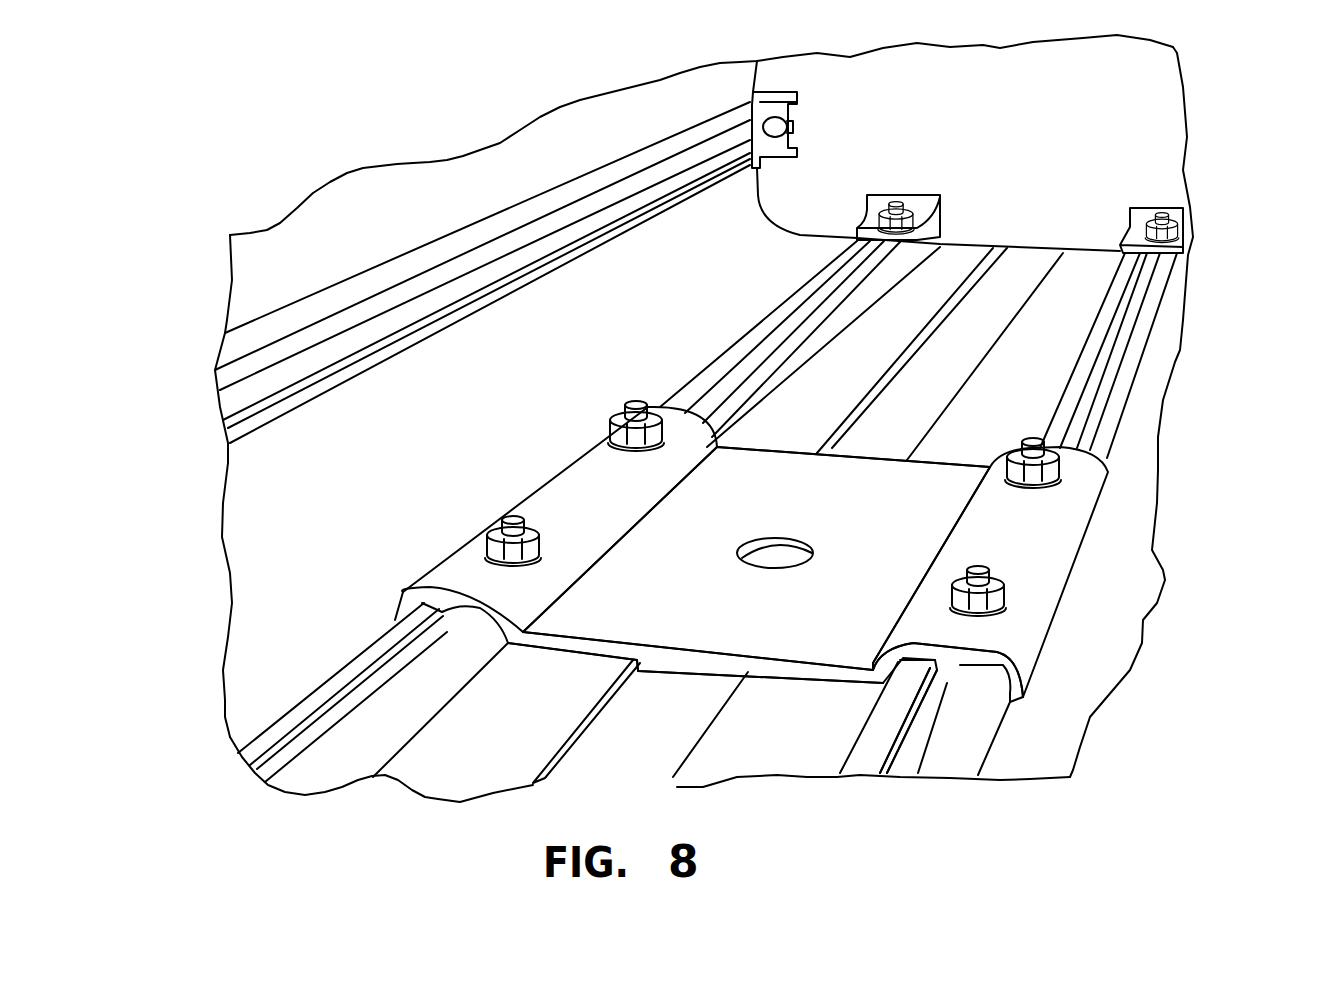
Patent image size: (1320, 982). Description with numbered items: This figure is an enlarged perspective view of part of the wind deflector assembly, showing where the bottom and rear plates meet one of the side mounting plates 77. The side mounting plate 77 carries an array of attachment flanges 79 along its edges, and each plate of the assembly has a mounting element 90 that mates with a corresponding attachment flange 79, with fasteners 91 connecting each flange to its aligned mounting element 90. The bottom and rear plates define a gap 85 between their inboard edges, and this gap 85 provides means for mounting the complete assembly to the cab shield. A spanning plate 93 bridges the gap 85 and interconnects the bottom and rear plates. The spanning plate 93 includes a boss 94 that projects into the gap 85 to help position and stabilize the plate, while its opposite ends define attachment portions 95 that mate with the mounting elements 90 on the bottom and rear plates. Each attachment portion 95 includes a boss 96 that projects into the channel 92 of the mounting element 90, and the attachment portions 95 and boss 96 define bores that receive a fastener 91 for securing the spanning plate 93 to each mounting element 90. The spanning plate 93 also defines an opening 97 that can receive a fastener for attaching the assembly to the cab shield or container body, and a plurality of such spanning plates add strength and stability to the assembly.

The side mounting plate 77 is at (1163, 98).
The attachment flange 79 is at (1168, 215).
The gap 85 is at (697, 743).
The mounting element 90 is at (362, 322).
The fastener 91 is at (1180, 240).
The channel 92 is at (928, 740).
The spanning plate 93 is at (1033, 633).
The boss 94 is at (690, 663).
The attachment portion 95 is at (1057, 567).
The boss 96 is at (960, 663).
The opening 97 is at (812, 565).